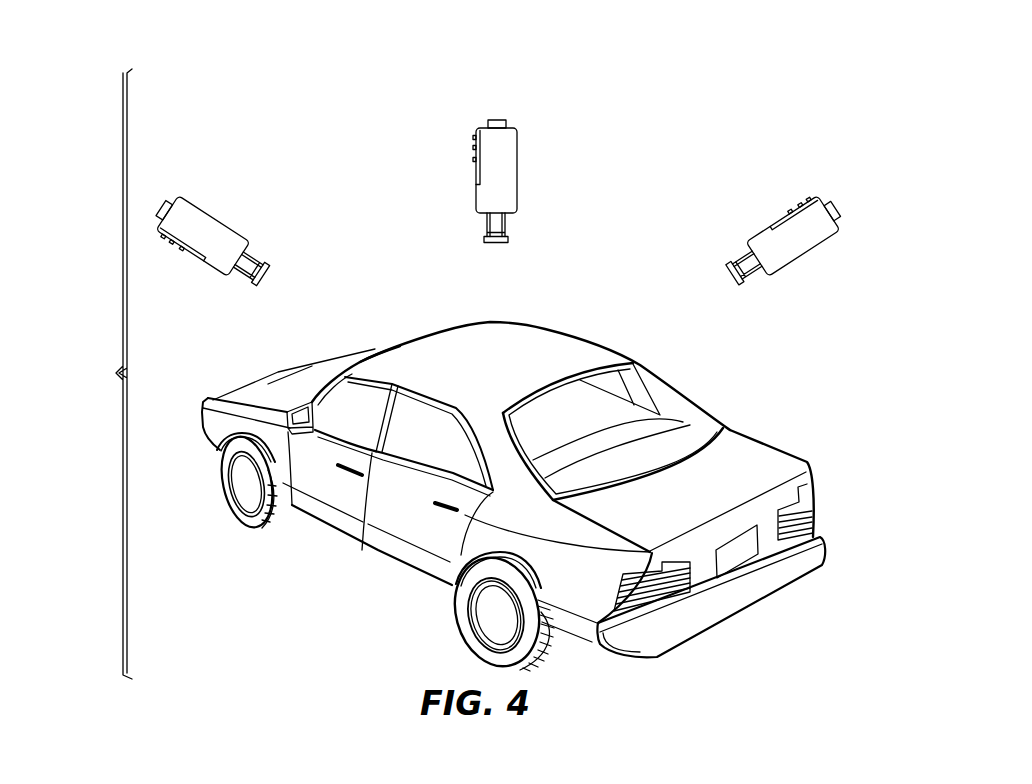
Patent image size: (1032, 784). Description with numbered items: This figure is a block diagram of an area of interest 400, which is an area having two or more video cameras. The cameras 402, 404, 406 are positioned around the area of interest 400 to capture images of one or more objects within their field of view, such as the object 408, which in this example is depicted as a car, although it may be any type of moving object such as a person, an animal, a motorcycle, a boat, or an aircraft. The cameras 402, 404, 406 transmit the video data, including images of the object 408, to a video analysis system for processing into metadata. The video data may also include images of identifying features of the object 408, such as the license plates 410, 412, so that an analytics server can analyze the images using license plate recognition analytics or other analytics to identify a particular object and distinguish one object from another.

The area of interest 400 is at (77, 374).
The camera 402 is at (233, 233).
The camera 404 is at (493, 120).
The camera 406 is at (838, 232).
The object 408 is at (563, 332).
The license plate 410 is at (827, 547).
The license plate 412 is at (255, 380).